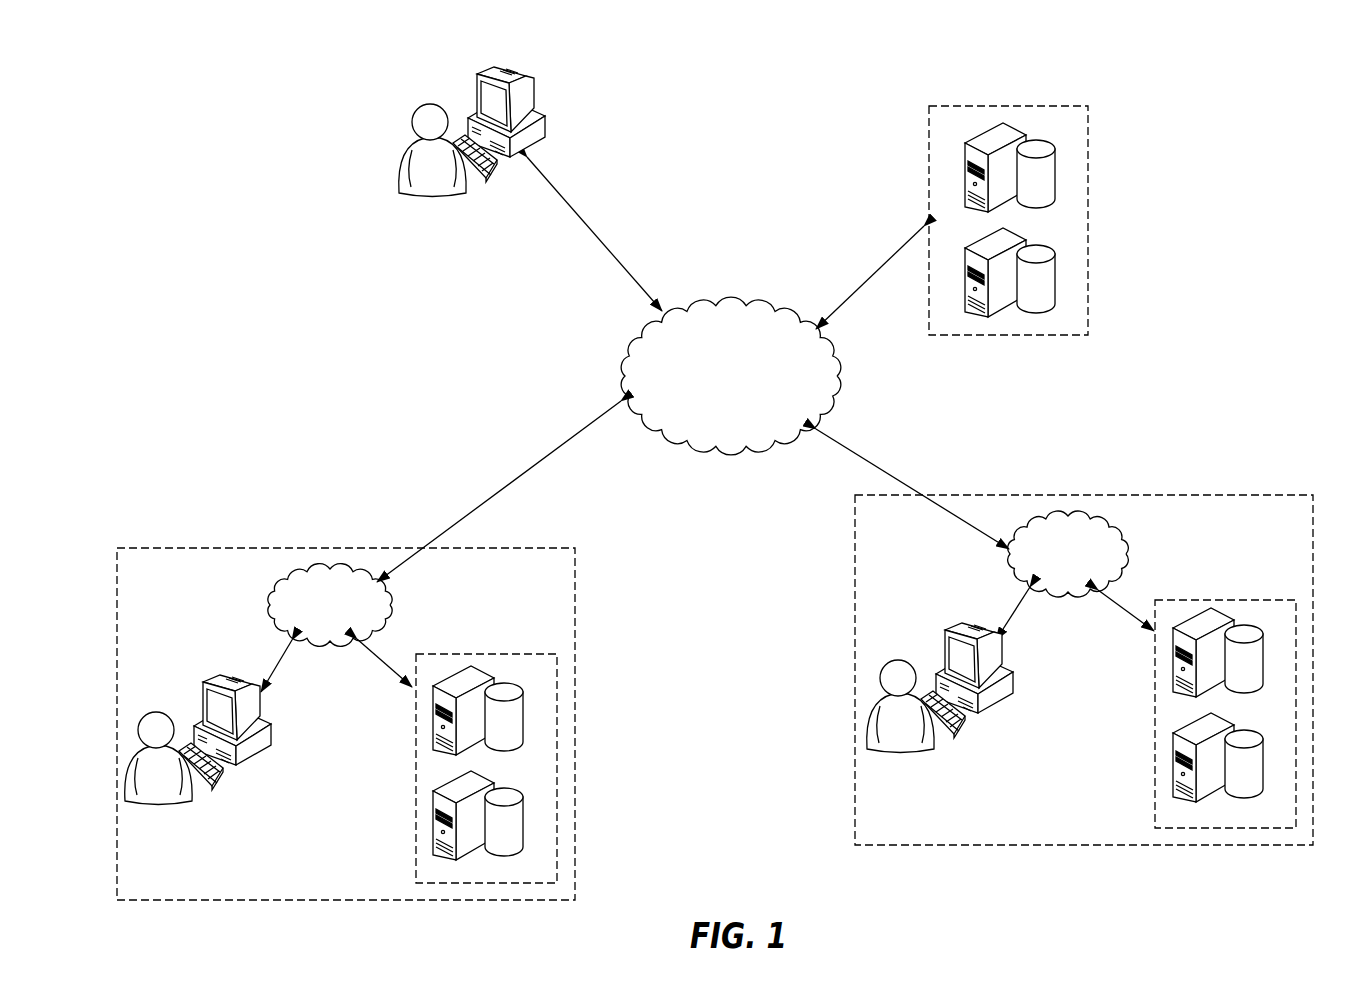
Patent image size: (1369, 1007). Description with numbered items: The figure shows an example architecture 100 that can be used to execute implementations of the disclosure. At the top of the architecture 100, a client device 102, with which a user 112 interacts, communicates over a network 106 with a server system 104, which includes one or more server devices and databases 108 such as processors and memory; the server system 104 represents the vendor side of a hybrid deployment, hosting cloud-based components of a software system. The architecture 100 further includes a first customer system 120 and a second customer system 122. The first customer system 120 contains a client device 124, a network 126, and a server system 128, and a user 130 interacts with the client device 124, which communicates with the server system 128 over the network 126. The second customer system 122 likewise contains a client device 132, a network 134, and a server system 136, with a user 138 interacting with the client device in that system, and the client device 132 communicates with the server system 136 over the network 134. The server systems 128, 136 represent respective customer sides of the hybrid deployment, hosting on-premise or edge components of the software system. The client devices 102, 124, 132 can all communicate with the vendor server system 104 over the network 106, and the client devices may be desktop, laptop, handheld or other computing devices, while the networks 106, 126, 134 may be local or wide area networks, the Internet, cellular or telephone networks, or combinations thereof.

The example architecture 100 is at (1275, 78).
The client device 102 is at (472, 82).
The server system 104 is at (1088, 222).
The network 106 is at (732, 305).
The server devices and databases 108 is at (966, 172).
The user 112 is at (433, 198).
The first customer system 120 is at (183, 548).
The second customer system 122 is at (1212, 493).
The client device 124 is at (201, 690).
The network 126 is at (270, 607).
The server system 128 is at (478, 652).
The user 130 is at (159, 806).
The client device 132 is at (942, 638).
The network 134 is at (1082, 513).
The server system 136 is at (1204, 598).
The user 138 is at (900, 754).